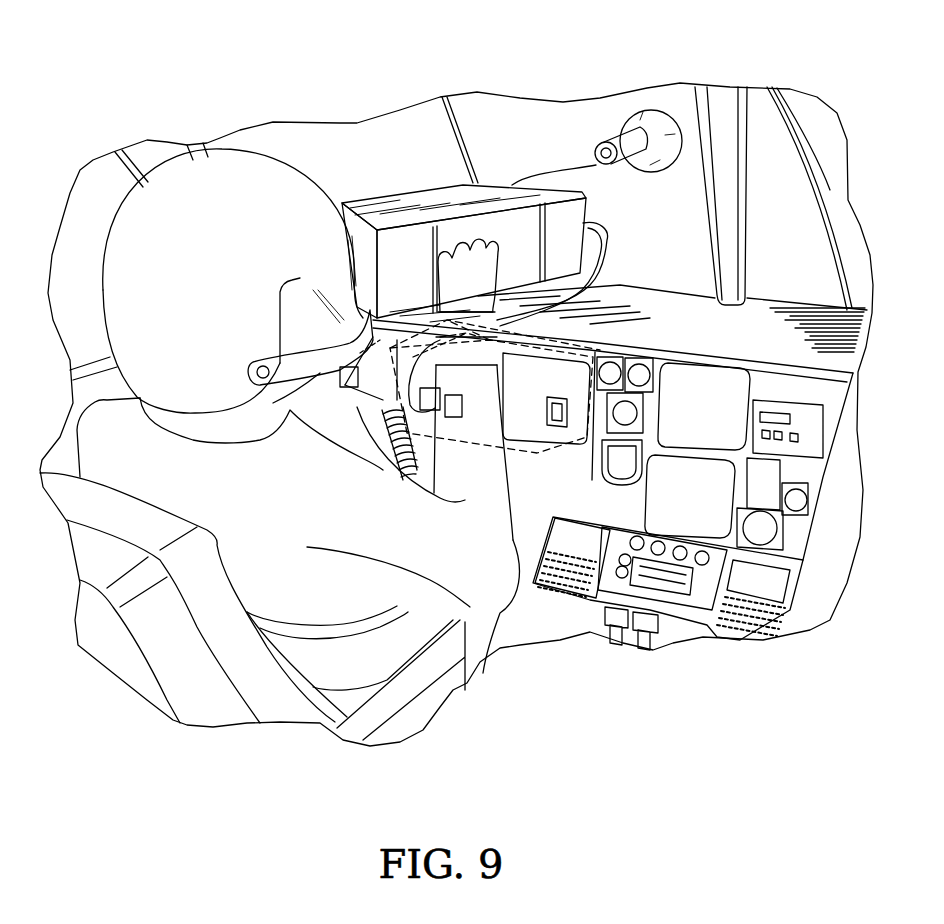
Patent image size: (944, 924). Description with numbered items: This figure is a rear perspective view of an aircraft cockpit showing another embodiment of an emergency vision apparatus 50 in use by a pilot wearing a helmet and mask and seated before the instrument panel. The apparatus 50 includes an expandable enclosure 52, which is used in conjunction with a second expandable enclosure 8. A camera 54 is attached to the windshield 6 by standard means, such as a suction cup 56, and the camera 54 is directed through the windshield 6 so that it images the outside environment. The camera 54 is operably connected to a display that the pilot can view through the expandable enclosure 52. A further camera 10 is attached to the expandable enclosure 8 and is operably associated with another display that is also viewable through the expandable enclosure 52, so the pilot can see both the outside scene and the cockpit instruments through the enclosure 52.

The windshield 6 is at (777, 140).
The expandable enclosure 8 is at (563, 593).
The camera 10 is at (453, 417).
The emergency vision apparatus 50 is at (493, 155).
The expandable enclosure 52 is at (385, 188).
The camera 54 is at (617, 148).
The suction cup 56 is at (655, 123).